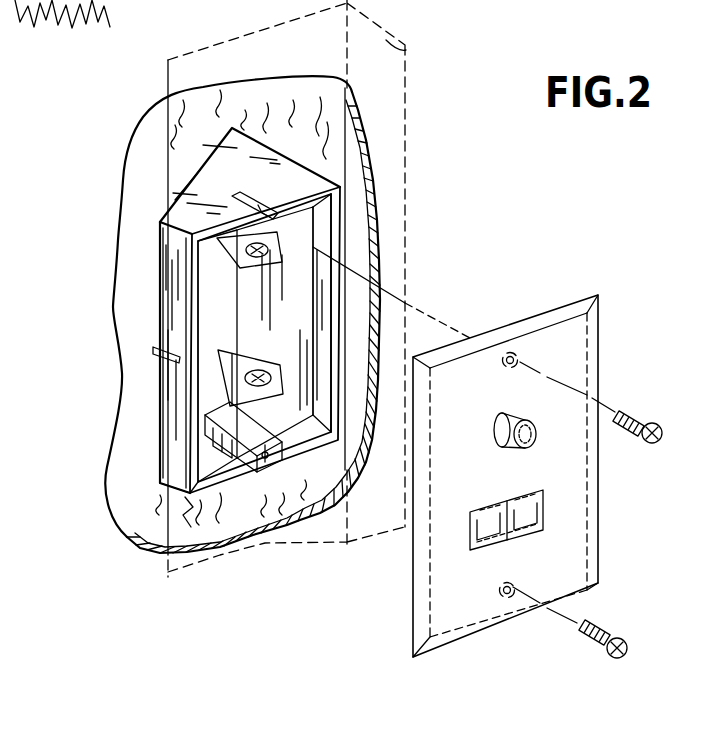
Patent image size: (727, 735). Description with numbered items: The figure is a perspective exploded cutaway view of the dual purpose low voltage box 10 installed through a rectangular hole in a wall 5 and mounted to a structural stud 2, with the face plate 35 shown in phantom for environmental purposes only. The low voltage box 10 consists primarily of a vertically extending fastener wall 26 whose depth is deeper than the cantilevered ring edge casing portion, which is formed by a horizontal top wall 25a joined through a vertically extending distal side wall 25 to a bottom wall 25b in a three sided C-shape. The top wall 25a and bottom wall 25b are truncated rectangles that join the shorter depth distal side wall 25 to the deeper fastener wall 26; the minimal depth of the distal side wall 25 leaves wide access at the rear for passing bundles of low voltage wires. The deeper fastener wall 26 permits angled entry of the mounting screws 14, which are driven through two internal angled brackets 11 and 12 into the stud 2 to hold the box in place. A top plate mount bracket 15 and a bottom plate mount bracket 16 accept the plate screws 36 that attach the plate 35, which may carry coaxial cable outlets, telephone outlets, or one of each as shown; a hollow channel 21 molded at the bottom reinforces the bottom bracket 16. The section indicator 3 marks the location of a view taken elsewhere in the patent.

The stud 2 is at (347, 128).
The section view indicator 3 is at (248, 100).
The wall 5 is at (372, 64).
The low voltage box 10 is at (130, 257).
The internal angled bracket 11 is at (255, 258).
The internal angled bracket 12 is at (218, 350).
The mounting screws 14 is at (267, 363).
The top plate mount bracket 15 is at (247, 224).
The bottom plate mount bracket 16 is at (215, 465).
The hollow channel 21 is at (180, 423).
The distal side wall 25 is at (167, 315).
The top wall 25a is at (205, 170).
The bottom wall 25b is at (204, 470).
The fastener wall 26 is at (306, 244).
The plate 35 is at (528, 325).
The plate screws 36 is at (640, 420).